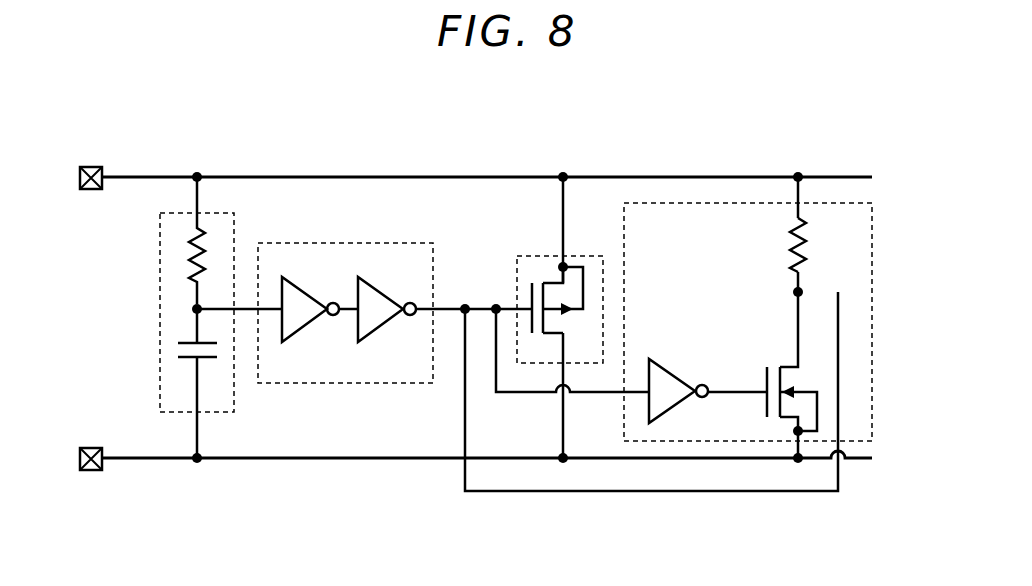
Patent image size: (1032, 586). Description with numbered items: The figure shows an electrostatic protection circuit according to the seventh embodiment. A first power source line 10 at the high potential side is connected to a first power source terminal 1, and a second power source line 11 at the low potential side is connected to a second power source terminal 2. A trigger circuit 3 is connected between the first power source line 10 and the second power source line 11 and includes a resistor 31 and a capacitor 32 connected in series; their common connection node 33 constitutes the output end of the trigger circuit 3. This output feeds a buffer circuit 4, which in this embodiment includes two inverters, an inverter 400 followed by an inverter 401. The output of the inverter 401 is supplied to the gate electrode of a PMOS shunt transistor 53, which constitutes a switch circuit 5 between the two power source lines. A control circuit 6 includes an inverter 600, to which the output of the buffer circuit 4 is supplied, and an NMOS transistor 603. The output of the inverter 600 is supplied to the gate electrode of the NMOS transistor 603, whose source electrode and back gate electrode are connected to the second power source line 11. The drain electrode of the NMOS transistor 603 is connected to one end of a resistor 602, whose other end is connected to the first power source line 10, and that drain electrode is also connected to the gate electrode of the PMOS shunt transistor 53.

The first power source terminal 1 is at (90, 166).
The second power source terminal 2 is at (92, 447).
The trigger circuit 3 is at (159, 226).
The buffer circuit 4 is at (343, 243).
The switch circuit 5 is at (587, 256).
The control circuit 6 is at (697, 203).
The first power source line 10 is at (257, 175).
The second power source line 11 is at (231, 460).
The resistor 31 is at (190, 262).
The capacitor 32 is at (180, 350).
The common connection node 33 is at (193, 309).
The PMOS shunt transistor 53 is at (536, 270).
The inverter 400 is at (305, 290).
The inverter 401 is at (388, 290).
The inverter 600 is at (681, 410).
The resistor 602 is at (808, 226).
The NMOS transistor 603 is at (775, 422).